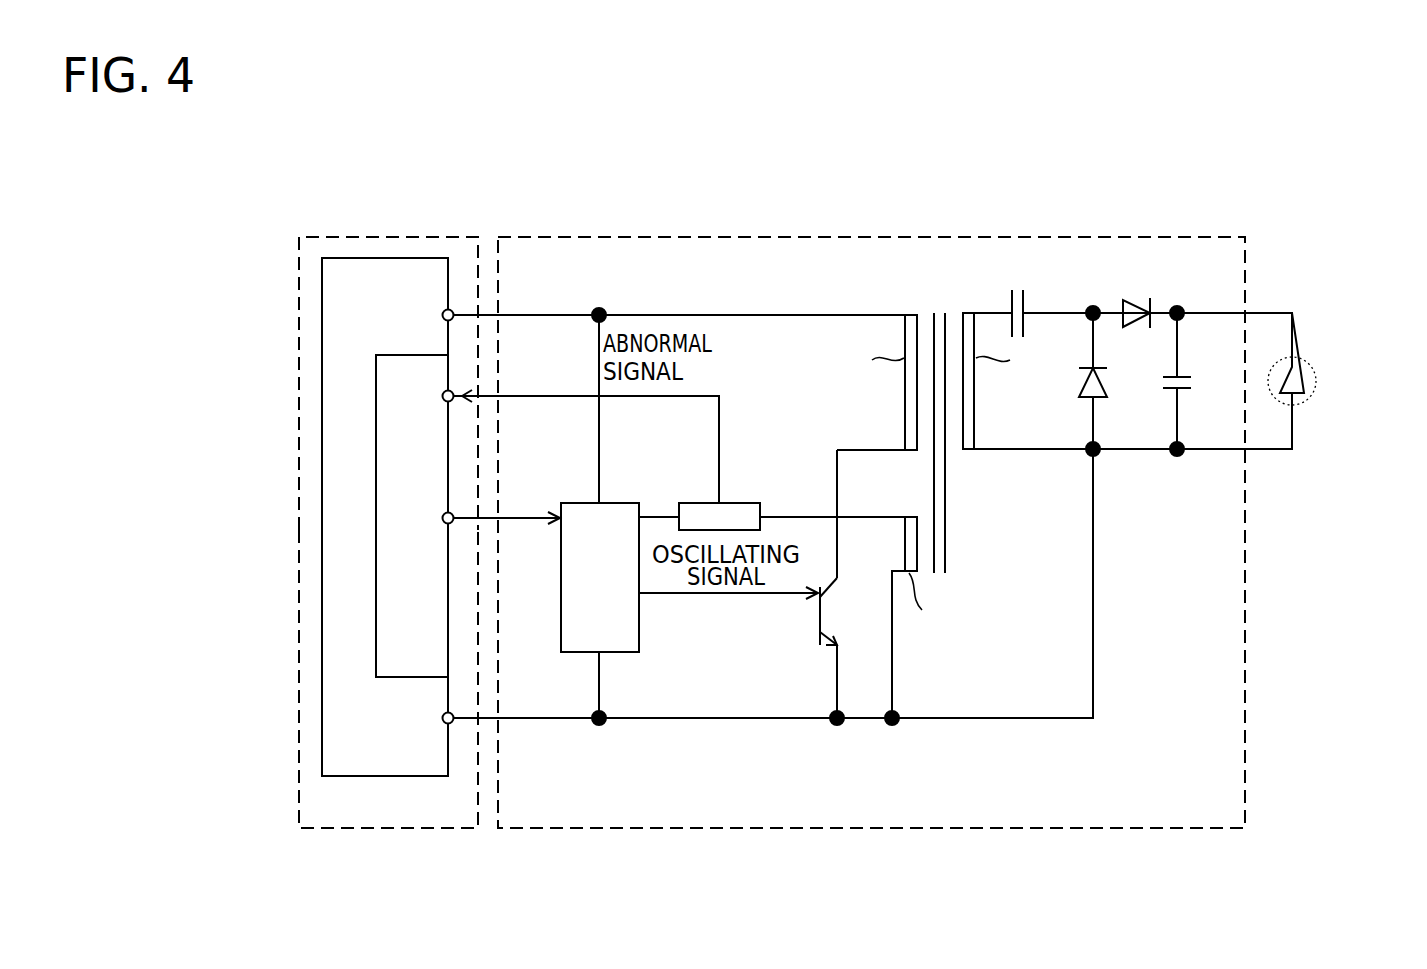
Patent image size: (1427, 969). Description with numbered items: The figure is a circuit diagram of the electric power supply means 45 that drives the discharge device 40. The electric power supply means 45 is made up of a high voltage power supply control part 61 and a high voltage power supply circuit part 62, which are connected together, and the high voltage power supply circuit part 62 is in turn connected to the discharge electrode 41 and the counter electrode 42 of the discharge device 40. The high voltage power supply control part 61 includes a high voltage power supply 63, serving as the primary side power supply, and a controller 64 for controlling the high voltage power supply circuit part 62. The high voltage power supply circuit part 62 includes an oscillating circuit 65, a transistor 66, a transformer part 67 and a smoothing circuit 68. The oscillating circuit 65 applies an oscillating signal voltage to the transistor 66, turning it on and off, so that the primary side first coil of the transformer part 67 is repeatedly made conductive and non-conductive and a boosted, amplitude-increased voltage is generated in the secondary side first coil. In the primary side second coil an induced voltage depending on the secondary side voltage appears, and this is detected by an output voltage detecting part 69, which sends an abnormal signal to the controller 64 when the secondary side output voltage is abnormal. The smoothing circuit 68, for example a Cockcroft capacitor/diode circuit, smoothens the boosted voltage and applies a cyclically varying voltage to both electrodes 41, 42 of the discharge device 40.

The discharge device 40 is at (1340, 387).
The discharge electrode 41 is at (1297, 366).
The counter electrode 42 is at (1298, 393).
The electric power supply means 45 is at (1273, 188).
The high voltage power supply control part 61 is at (398, 237).
The high voltage power supply circuit part 62 is at (806, 237).
The high voltage power supply 63 is at (401, 830).
The controller 64 is at (376, 503).
The oscillating circuit 65 is at (641, 642).
The transistor 66 is at (817, 638).
The transformer part 67 is at (937, 305).
The smoothing circuit 68 is at (1058, 305).
The output voltage detecting part 69 is at (746, 503).